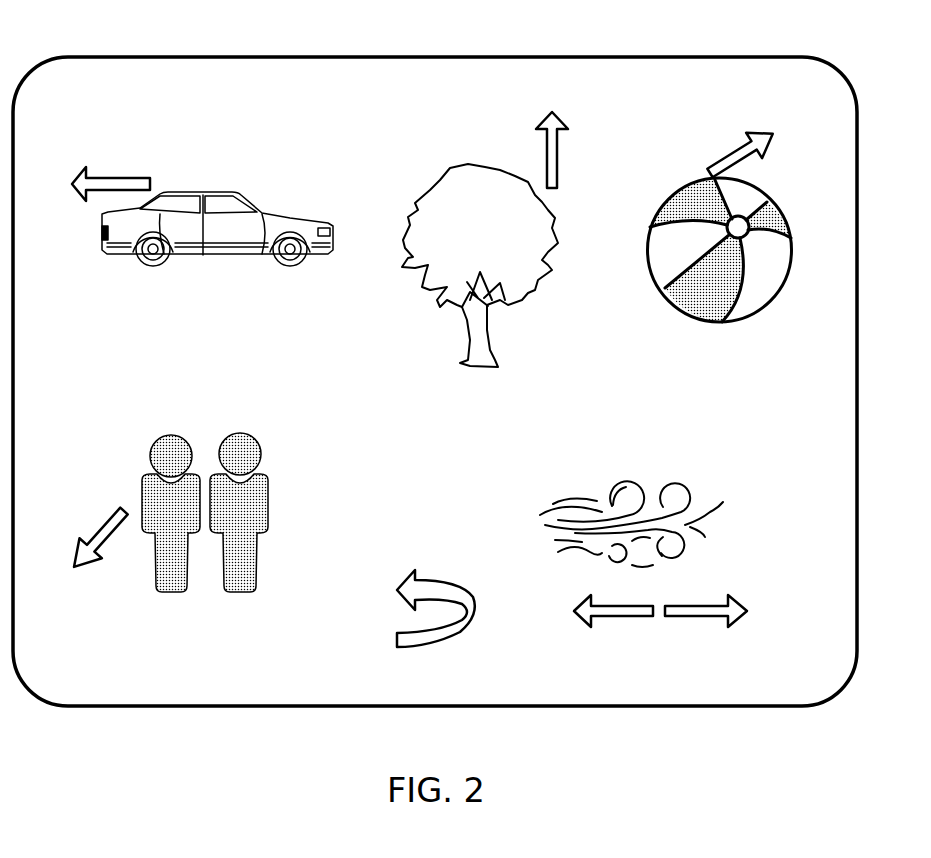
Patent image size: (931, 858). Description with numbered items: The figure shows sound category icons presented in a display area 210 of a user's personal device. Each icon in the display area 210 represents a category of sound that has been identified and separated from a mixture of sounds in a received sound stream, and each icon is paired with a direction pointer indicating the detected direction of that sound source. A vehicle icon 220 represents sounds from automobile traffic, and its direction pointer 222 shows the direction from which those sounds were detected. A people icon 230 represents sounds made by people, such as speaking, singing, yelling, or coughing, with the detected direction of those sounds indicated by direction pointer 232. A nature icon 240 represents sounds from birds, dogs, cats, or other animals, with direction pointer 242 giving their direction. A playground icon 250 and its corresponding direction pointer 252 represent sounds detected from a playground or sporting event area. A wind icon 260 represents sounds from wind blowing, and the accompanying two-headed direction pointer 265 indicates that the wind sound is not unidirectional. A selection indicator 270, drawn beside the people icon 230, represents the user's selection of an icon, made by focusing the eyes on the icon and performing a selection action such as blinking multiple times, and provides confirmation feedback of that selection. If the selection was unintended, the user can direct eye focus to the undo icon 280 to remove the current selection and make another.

The display area 210 is at (93, 56).
The vehicle icon 220 is at (207, 192).
The direction pointer 222 is at (114, 177).
The people icon 230 is at (170, 434).
The direction pointer 232 is at (103, 550).
The nature icon 240 is at (457, 172).
The direction pointer 242 is at (560, 153).
The playground icon 250 is at (703, 322).
The direction pointer 252 is at (727, 150).
The wind icon 260 is at (572, 498).
The double-headed arrow indicating bidirectional motion 265 is at (663, 615).
The selection indicator 270 is at (284, 605).
The undo icon 280 is at (465, 633).